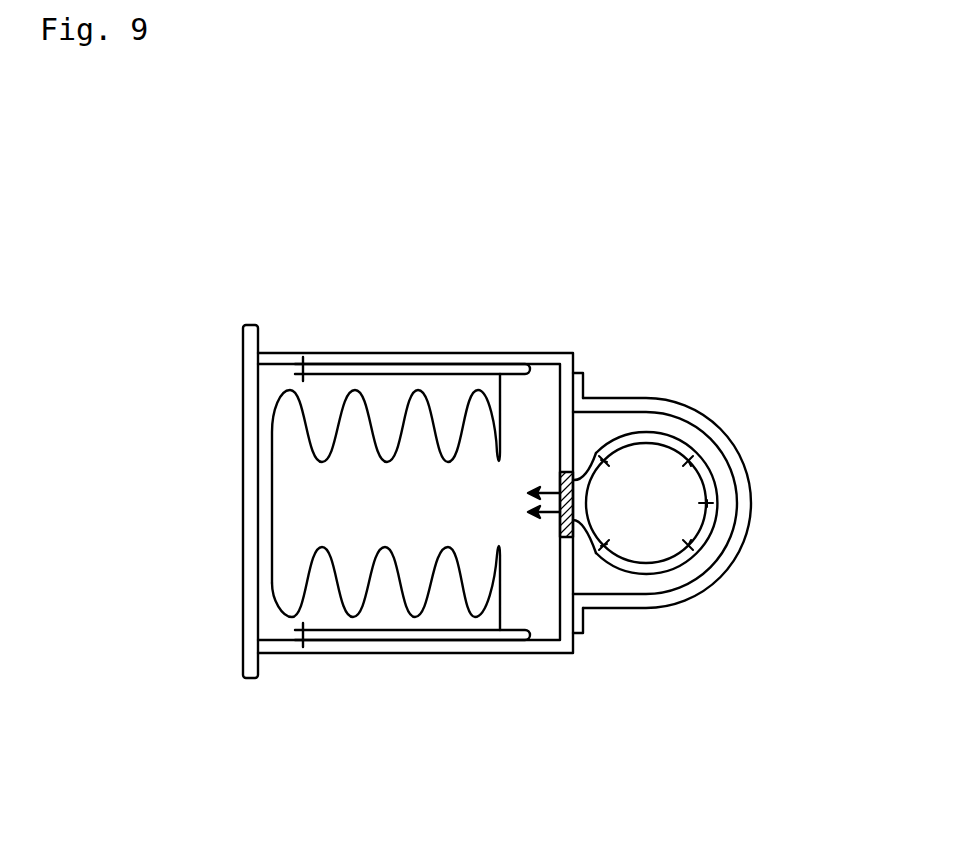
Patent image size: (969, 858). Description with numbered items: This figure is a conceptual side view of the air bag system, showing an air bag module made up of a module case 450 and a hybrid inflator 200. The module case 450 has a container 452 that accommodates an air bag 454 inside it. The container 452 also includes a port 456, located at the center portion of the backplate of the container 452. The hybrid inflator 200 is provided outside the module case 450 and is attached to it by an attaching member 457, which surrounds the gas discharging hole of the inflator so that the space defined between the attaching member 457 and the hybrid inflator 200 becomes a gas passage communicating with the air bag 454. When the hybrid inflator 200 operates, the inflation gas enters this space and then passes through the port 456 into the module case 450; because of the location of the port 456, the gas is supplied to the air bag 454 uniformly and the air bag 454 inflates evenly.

The module case 450 is at (438, 316).
The container 452 is at (402, 653).
The air bag 454 is at (290, 572).
The port 456 is at (560, 486).
The attaching member 457 is at (733, 443).
The hybrid inflator 200 is at (657, 548).